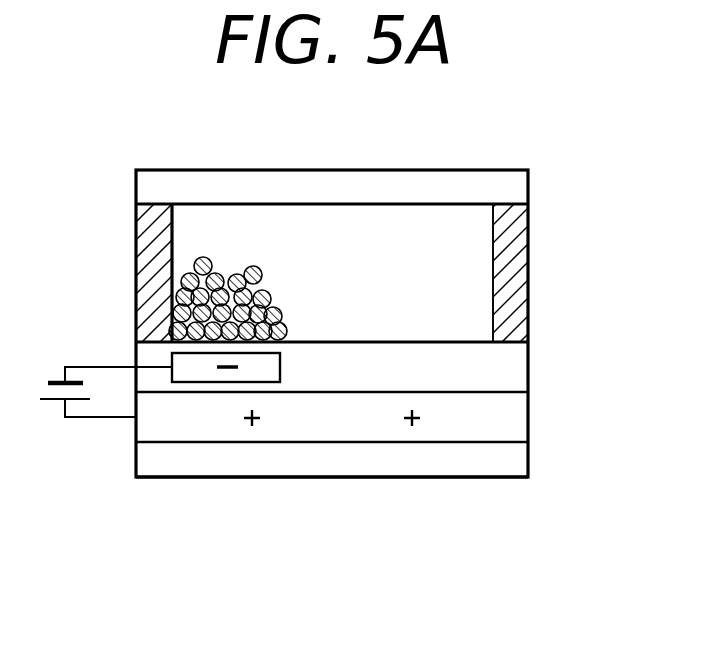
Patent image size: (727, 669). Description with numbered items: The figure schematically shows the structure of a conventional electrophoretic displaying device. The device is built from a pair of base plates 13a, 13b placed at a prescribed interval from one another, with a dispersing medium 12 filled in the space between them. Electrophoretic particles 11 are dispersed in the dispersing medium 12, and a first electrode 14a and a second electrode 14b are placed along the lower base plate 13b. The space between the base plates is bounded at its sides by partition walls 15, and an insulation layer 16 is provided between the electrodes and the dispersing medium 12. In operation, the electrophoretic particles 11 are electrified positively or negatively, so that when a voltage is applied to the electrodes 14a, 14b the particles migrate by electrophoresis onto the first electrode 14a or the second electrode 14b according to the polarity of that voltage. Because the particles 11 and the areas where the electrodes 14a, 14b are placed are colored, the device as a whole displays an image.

The electrophoretic particles 11 is at (220, 267).
The dispersing medium 12 is at (467, 242).
The base plate 13a is at (510, 192).
The base plate 13b is at (515, 460).
The first electrode 14a is at (195, 370).
The second electrode 14b is at (515, 415).
The partition walls 15 is at (157, 270).
The insulation layer 16 is at (515, 365).